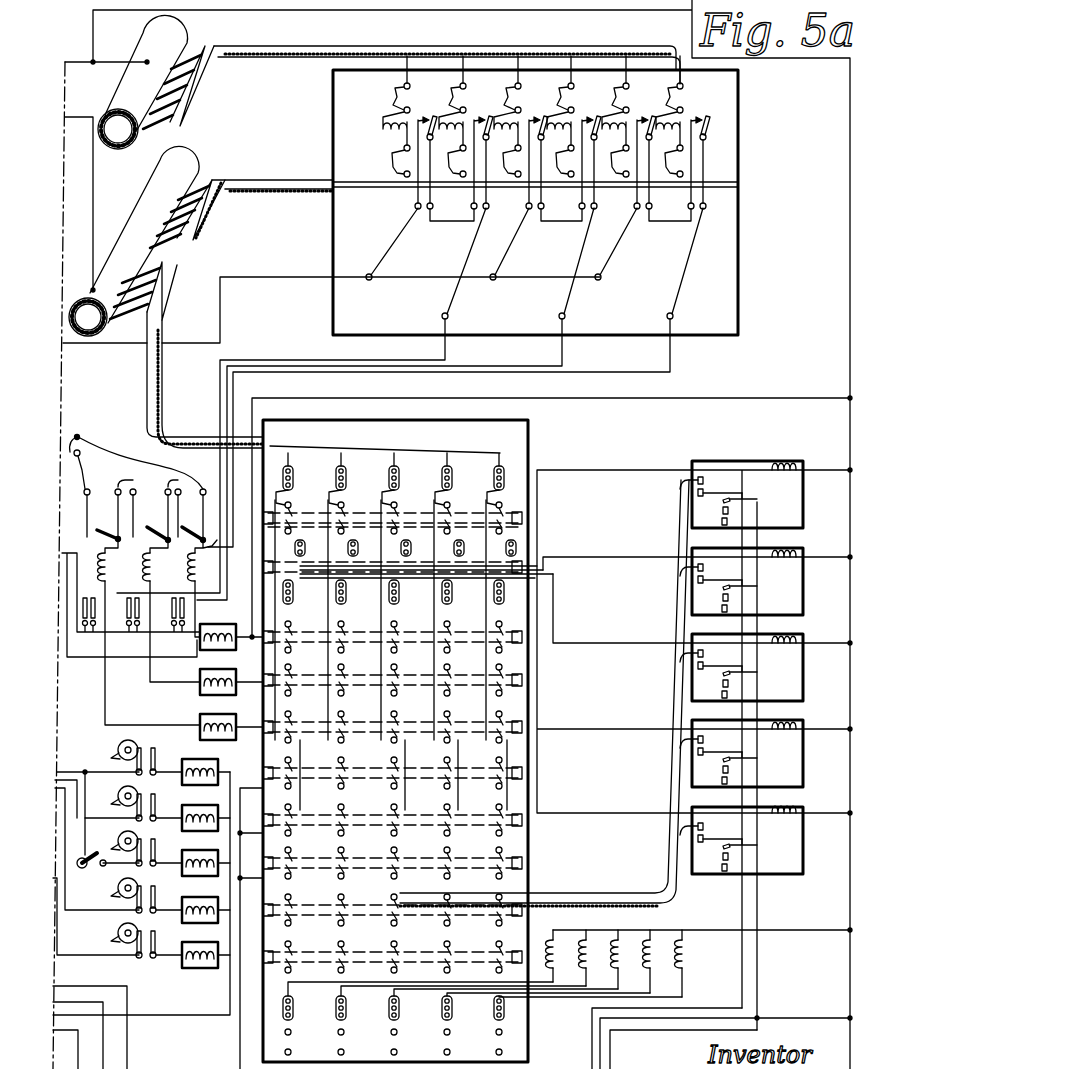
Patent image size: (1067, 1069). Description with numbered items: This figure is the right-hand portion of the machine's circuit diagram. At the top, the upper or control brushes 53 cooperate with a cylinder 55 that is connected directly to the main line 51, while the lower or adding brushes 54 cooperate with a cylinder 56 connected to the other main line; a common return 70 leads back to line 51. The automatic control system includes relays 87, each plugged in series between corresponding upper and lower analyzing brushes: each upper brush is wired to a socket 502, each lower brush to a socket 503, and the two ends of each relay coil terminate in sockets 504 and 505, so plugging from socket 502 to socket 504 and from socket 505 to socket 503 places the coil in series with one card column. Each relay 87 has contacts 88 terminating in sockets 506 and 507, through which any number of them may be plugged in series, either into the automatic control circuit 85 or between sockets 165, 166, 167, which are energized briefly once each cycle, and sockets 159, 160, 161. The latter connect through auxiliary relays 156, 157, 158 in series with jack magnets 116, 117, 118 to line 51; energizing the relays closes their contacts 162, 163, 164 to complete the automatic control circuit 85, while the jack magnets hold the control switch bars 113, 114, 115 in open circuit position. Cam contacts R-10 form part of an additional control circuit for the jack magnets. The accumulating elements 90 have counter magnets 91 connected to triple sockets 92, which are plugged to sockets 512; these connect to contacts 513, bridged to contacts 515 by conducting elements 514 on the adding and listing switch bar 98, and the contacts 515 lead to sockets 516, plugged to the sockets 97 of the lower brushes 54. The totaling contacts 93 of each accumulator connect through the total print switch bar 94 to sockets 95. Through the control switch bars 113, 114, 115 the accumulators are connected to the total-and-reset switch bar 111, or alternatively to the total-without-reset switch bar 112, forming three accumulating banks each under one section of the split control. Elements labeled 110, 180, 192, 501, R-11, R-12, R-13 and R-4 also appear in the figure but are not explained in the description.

The line 51 is at (850, 164).
The upper or control brushes 53 is at (197, 44).
The lower or adding brushes 54 is at (200, 181).
The cylinder 55 is at (126, 85).
The cylinder 56 is at (134, 218).
The common return 70 is at (782, 1016).
The automatic control circuit 85 is at (135, 462).
The relay 87 is at (384, 134).
The contacts 88 is at (709, 106).
The accumulating elements 90 is at (803, 495).
The counter magnet 91 is at (784, 462).
The triple socket 92 is at (336, 592).
The totaling contacts 93 is at (704, 480).
The total print switch bar 94 is at (313, 912).
The sockets 95 is at (286, 927).
The sockets 97 is at (336, 478).
The adding and listing switch bar 98 is at (357, 512).
The contact bar 110 is at (357, 863).
The total-and-reset switch bar 111 is at (357, 816).
The total-without-reset switch bar 112 is at (357, 768).
The control switch bar 113 is at (357, 724).
The control switch bar 114 is at (357, 678).
The control switch bar 115 is at (356, 633).
The jack magnet 116 is at (222, 715).
The jack magnet 117 is at (222, 670).
The jack magnet 118 is at (222, 624).
The auxiliary relay 156 is at (102, 556).
The auxiliary relay 157 is at (147, 566).
The auxiliary relay 158 is at (195, 556).
The socket 159 is at (448, 316).
The socket 160 is at (565, 316).
The socket 161 is at (673, 316).
The contacts 162 is at (92, 527).
The contacts 163 is at (140, 527).
The contacts 164 is at (182, 527).
The socket 165 is at (373, 276).
The socket 166 is at (497, 276).
The socket 167 is at (602, 277).
The coils 180 is at (657, 948).
The contacts 192 is at (91, 660).
The contact 501 is at (530, 209).
The socket 502 is at (411, 86).
The socket 503 is at (405, 177).
The relay socket 504 is at (406, 108).
The relay socket 505 is at (710, 141).
The socket 506 is at (415, 208).
The socket 507 is at (706, 212).
The sockets 512 is at (308, 533).
The contacts 513 is at (287, 527).
The conducting elements 514 is at (285, 505).
The contacts 515 is at (290, 506).
The sockets 516 is at (387, 497).
The relay R-11 is at (143, 762).
The cam contacts R-10 is at (142, 801).
The relay R-12 is at (153, 847).
The relay R-13 is at (142, 855).
The relay R-4 is at (141, 923).